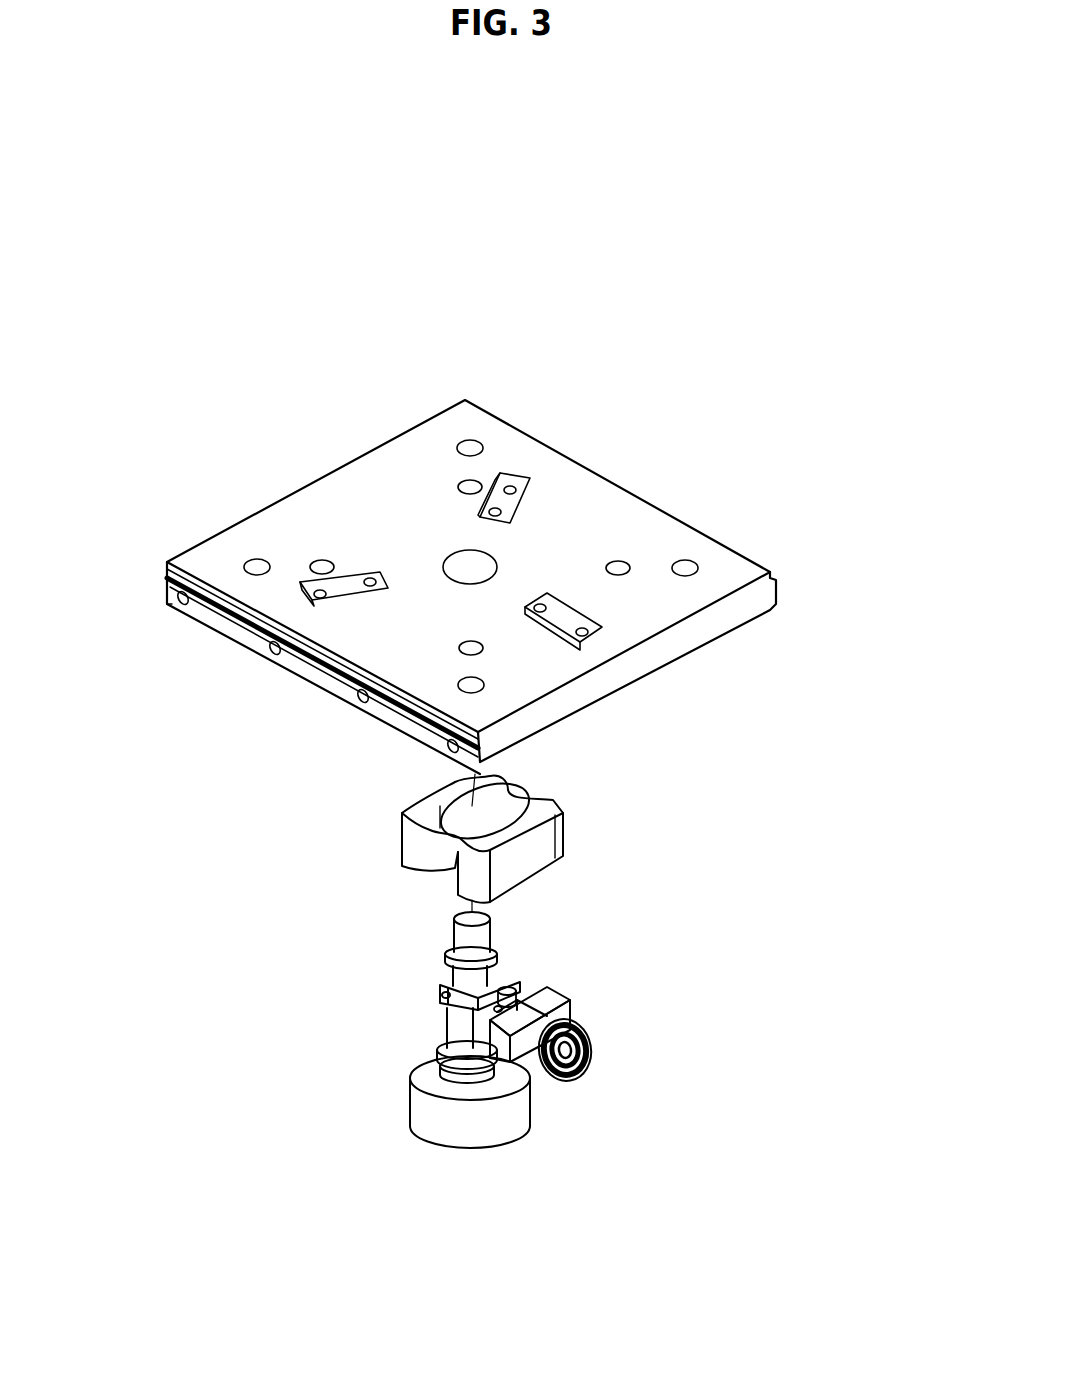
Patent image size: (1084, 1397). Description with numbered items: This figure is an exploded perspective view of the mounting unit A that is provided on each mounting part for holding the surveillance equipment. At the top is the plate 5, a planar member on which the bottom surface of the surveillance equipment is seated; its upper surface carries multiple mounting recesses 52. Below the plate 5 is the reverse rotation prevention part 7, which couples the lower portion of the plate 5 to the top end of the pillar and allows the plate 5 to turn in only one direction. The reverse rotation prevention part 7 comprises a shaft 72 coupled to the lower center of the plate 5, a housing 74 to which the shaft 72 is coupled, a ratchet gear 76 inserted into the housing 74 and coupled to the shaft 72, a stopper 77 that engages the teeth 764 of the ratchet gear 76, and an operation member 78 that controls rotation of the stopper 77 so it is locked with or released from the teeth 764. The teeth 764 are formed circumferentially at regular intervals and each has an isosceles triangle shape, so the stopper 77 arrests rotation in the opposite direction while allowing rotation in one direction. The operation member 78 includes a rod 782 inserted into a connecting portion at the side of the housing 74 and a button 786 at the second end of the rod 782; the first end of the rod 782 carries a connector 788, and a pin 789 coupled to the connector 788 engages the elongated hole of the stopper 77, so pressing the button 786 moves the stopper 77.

The mounting unit A is at (692, 357).
The plate 5 is at (595, 525).
The mounting recess 52 is at (330, 575).
The reverse rotation prevention part 7 is at (368, 978).
The shaft 72 is at (455, 940).
The housing 74 is at (545, 855).
The ratchet gear 76 is at (442, 985).
The teeth 764 is at (440, 1052).
The stopper 77 is at (530, 985).
The operation member 78 is at (685, 1035).
The rod 782 is at (508, 1062).
The button 786 is at (567, 1072).
The connector 788 is at (478, 1012).
The pin 789 is at (520, 985).